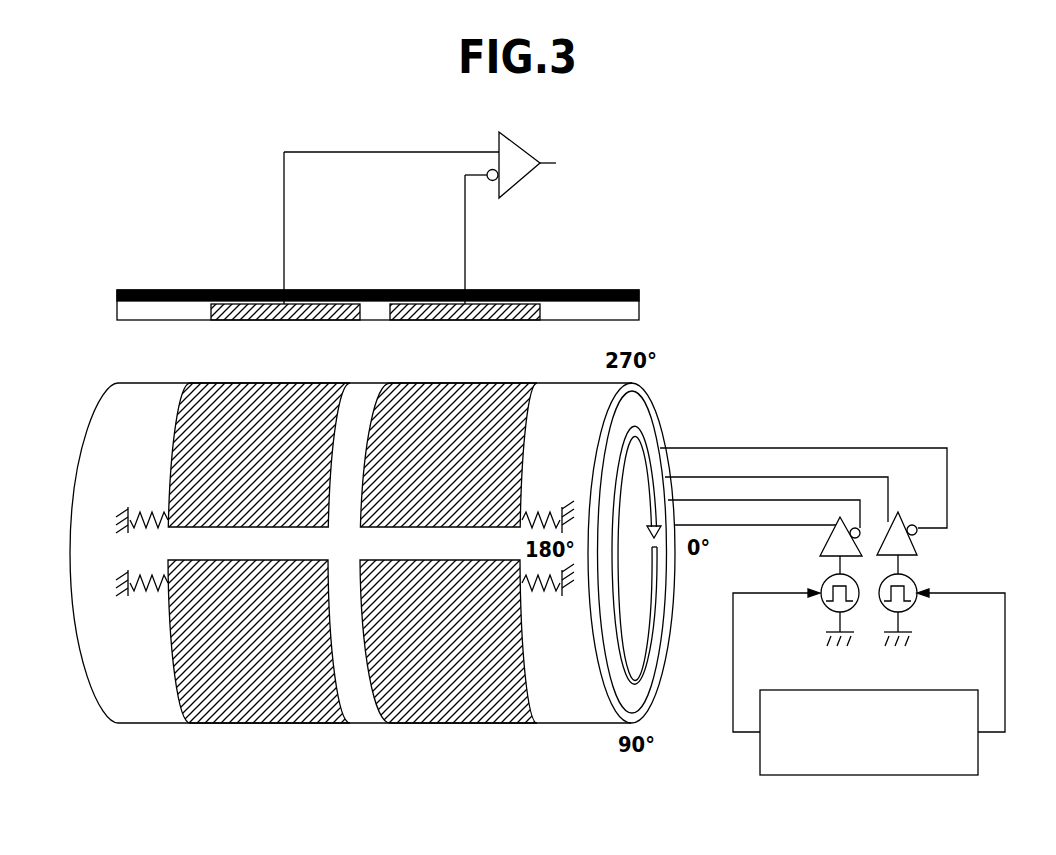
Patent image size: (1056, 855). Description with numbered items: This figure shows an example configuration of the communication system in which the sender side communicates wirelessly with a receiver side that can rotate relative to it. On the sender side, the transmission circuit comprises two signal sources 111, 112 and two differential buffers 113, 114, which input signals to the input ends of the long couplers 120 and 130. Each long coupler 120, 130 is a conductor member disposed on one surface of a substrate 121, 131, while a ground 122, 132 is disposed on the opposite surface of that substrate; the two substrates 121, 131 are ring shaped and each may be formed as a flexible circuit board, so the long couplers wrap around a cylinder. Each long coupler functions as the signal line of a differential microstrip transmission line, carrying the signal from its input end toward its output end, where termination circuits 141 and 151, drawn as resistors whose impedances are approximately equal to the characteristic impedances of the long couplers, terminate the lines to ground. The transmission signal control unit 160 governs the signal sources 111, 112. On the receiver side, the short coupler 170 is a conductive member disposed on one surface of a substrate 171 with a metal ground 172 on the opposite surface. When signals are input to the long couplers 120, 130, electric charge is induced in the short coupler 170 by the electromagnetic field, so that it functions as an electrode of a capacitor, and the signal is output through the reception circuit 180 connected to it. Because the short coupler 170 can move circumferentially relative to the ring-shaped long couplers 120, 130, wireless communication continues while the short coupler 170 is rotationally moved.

The signal source 111 is at (830, 606).
The signal source 112 is at (910, 610).
The differential buffer 113 is at (822, 542).
The differential buffer 114 is at (917, 548).
The long coupler 120 is at (372, 560).
The substrate 121 is at (133, 528).
The ground 122 is at (600, 585).
The long coupler 130 is at (267, 383).
The substrate 131 is at (141, 383).
The ground 132 is at (613, 703).
The termination circuit 141 is at (545, 592).
The termination circuit 151 is at (543, 512).
The transmission signal control unit 160 is at (900, 690).
The short coupler 170 is at (242, 290).
The substrate 171 is at (117, 312).
The ground 172 is at (590, 290).
The reception circuit 180 is at (520, 141).